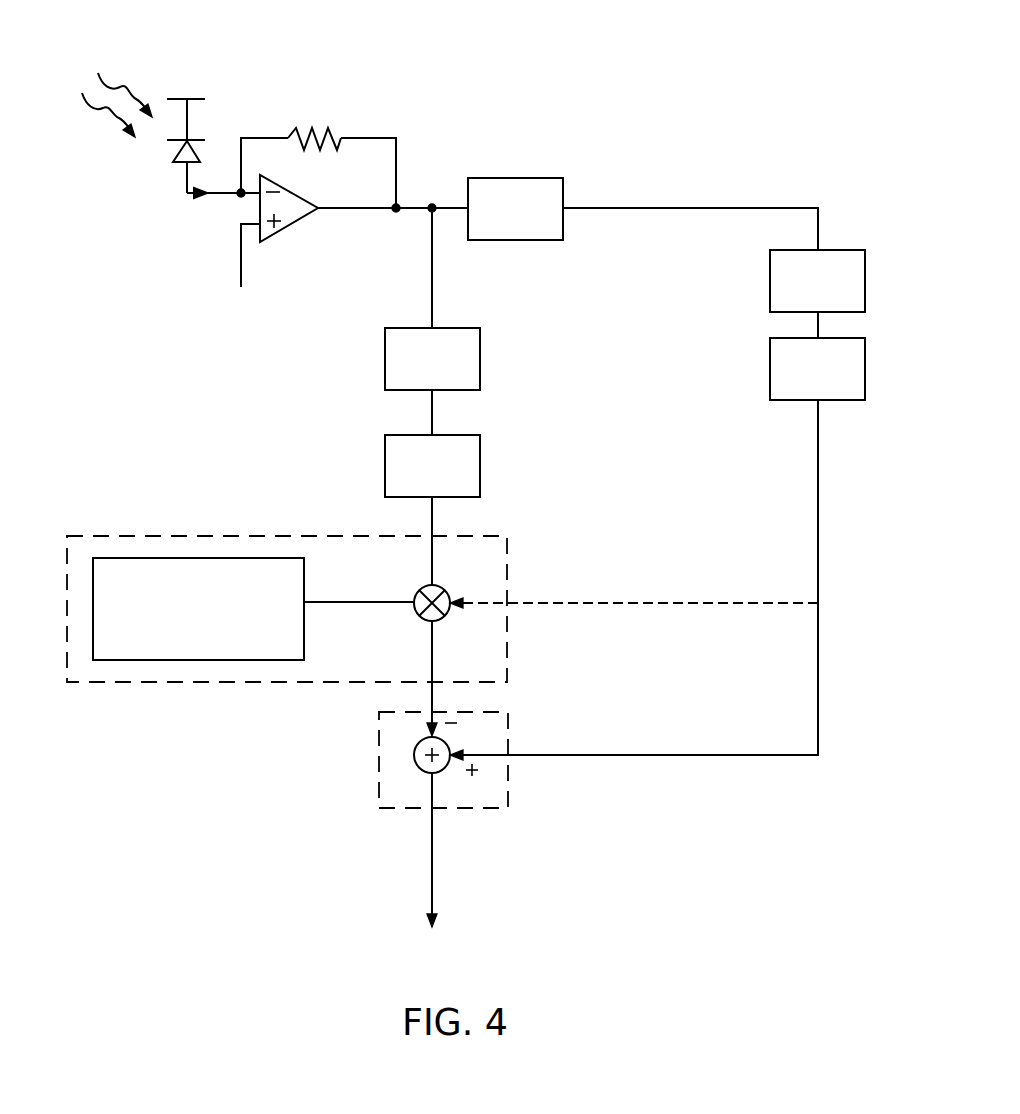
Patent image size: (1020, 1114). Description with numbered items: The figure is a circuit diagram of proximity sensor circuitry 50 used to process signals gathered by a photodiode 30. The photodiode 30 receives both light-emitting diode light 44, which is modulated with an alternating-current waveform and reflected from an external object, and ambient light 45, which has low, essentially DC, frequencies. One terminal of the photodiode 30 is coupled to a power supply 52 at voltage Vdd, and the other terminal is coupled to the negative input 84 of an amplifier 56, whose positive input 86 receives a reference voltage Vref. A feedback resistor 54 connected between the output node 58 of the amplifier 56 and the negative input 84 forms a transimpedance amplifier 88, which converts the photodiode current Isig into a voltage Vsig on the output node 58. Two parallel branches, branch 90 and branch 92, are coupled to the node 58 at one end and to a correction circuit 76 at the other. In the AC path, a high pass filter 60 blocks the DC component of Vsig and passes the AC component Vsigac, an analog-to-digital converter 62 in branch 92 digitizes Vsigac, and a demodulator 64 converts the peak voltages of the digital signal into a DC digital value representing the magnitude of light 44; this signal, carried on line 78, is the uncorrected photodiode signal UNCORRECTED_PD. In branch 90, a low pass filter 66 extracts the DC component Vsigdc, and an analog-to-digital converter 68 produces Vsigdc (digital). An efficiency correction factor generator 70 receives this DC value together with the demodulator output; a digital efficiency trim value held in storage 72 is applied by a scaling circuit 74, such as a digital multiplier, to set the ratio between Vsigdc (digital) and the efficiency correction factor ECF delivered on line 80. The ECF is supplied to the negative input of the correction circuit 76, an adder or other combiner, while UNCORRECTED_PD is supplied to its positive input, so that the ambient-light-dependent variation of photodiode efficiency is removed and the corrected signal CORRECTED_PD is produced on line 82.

The photodiode 30 is at (158, 161).
The light-emitting diode light 44 is at (108, 120).
The ambient light 45 is at (120, 87).
The proximity sensor circuitry 50 is at (650, 45).
The power supply 52 is at (193, 100).
The feedback resistor 54 is at (320, 131).
The amplifier 56 is at (283, 228).
The output node 58 is at (398, 206).
The high pass filter 60 is at (512, 183).
The analog-to-digital converter 62 is at (865, 283).
The demodulator 64 is at (865, 368).
The low pass filter 66 is at (480, 360).
The analog-to-digital converter 68 is at (480, 480).
The efficiency correction factor generator 70 is at (183, 682).
The storage 72 is at (304, 648).
The scaling circuit 74 is at (448, 592).
The correction circuit 76 is at (379, 777).
The uncorrected proximity signal path 78 is at (654, 753).
The efficiency correction factor signal 80 is at (433, 667).
The line 82 is at (430, 883).
The negative input 84 is at (252, 192).
The positive input 86 is at (241, 262).
The transimpedance amplifier 88 is at (356, 78).
The branch 90 is at (606, 355).
The branch 92 is at (740, 284).